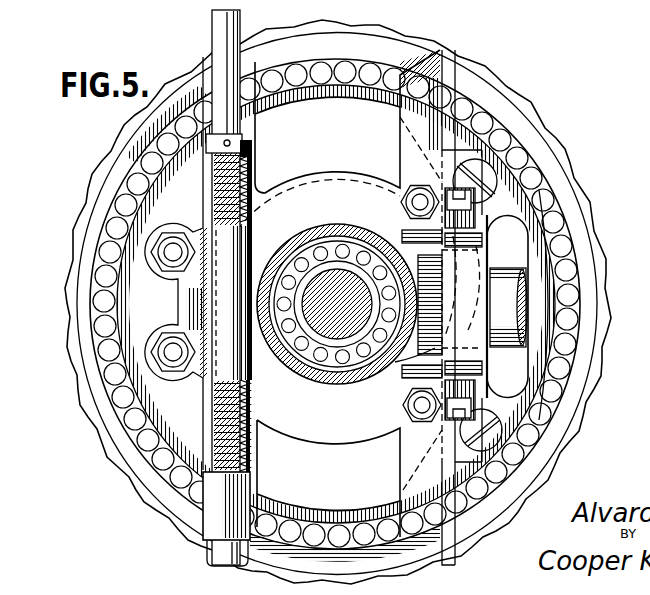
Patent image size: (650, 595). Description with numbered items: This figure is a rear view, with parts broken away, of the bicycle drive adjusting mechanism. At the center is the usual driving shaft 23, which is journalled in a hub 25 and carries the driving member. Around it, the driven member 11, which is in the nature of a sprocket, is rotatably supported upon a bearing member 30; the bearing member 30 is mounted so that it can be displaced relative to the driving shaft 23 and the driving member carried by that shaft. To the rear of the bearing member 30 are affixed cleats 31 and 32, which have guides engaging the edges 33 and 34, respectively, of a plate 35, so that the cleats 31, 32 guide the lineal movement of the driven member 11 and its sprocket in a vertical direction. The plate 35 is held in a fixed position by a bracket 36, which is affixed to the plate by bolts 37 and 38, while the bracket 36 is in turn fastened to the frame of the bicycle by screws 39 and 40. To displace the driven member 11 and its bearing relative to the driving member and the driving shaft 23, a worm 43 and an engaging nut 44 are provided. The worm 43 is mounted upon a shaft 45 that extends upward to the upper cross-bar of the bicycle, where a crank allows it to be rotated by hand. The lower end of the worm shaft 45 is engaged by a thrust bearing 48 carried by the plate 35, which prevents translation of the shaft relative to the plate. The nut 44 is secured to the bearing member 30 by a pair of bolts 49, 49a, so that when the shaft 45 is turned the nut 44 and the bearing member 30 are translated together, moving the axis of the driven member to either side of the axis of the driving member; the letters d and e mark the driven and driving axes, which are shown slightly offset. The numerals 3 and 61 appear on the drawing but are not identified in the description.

The housing 3 is at (642, 255).
The driven member 11 is at (90, 230).
The driving shaft 23 is at (326, 290).
The hub 25 is at (347, 234).
The bearing member 30 is at (120, 276).
The cleat 31 is at (443, 192).
The cleat 32 is at (197, 300).
The edge of plate 33 is at (448, 86).
The edge of plate 34 is at (197, 182).
The plate 35 is at (313, 44).
The bracket 36 is at (420, 398).
The bolt 37 is at (416, 190).
The bolt 38 is at (500, 284).
The screw 39 is at (465, 205).
The screw 40 is at (482, 410).
The worm 43 is at (216, 190).
The nut 44 is at (212, 242).
The worm shaft 45 is at (228, 45).
The thrust bearing 48 is at (222, 520).
The bolt 49 is at (172, 253).
The bolt 49a is at (173, 362).
The clearance slot 61 is at (538, 233).